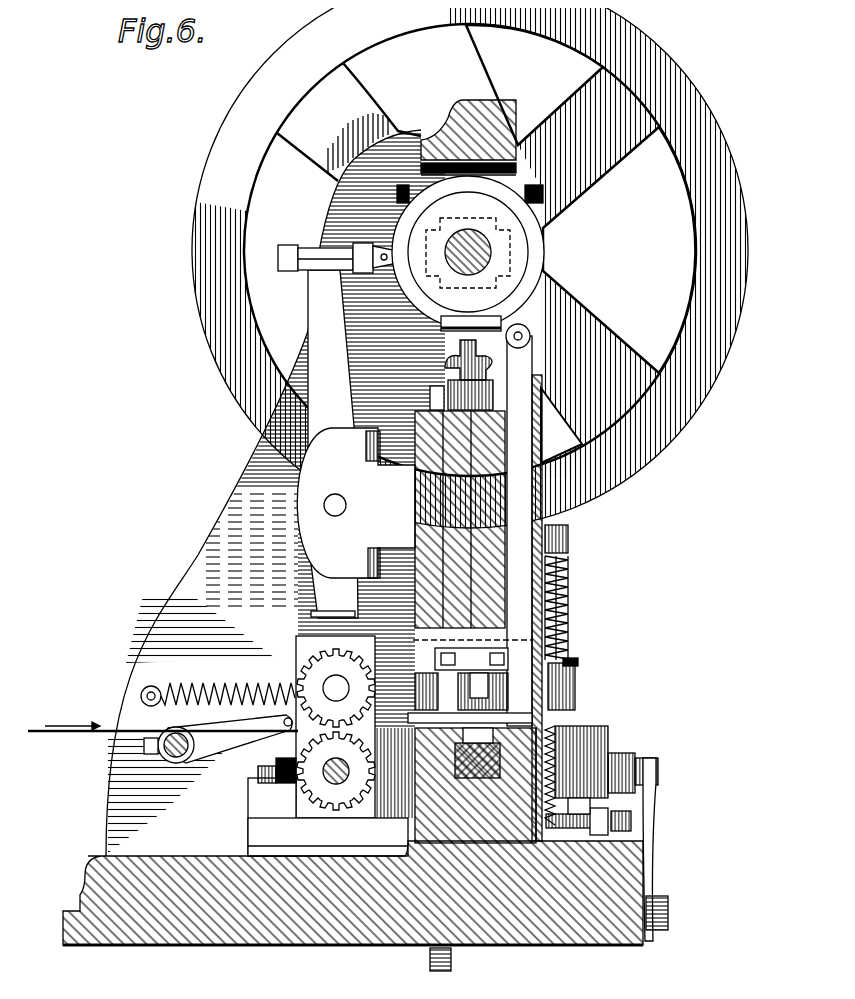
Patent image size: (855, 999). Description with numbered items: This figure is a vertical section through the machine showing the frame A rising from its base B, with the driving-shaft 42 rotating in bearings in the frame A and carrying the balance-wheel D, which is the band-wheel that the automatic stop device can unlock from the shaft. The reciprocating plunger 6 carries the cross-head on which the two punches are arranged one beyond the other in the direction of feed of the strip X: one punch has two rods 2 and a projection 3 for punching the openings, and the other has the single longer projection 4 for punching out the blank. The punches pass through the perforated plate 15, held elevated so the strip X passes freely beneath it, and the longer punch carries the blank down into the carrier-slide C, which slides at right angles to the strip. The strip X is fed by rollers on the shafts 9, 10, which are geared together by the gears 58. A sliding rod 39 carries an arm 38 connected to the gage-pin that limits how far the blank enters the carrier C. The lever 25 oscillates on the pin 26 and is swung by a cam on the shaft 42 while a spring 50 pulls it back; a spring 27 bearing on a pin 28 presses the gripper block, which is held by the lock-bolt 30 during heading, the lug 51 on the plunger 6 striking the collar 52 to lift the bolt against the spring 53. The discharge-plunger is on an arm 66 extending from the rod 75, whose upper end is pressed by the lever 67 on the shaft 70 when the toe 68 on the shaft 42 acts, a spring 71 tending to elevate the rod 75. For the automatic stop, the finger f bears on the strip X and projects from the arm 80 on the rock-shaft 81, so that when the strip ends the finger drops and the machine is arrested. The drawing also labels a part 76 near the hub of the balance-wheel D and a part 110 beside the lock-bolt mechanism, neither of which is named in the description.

The balance-wheel D is at (730, 222).
The frame A is at (222, 511).
The base B is at (264, 942).
The driving-shaft 42 is at (484, 245).
The toe 68 is at (536, 243).
The crank pin 76 is at (408, 287).
The lever 25 is at (333, 444).
The pin 26 is at (341, 497).
The lever 67 is at (437, 360).
The rod 75 is at (438, 389).
The shaft 70 is at (523, 368).
The slide rod 39 is at (512, 527).
The plunger 6 is at (460, 519).
The projection 3 is at (471, 661).
The rods 2 is at (424, 691).
The projection 4 is at (483, 691).
The perforated plate 15 is at (512, 700).
The carrier-slide C is at (475, 785).
The spring 53 is at (555, 585).
The lock-bolt 30 is at (552, 600).
The collar 52 is at (563, 652).
The lug 51 is at (568, 672).
The rack 110 is at (590, 775).
The pin 28 is at (640, 752).
The spring 27 is at (651, 818).
The gears 58 is at (336, 688).
The shaft 9 is at (338, 682).
The shaft 10 is at (328, 768).
The arm 66 is at (402, 718).
The spring 50 is at (210, 663).
The arm 80 is at (204, 748).
The rock-shaft 81 is at (166, 752).
The stop-finger f is at (266, 728).
The strip X is at (58, 728).
The arm 38 is at (528, 835).
The spring 71 is at (445, 955).